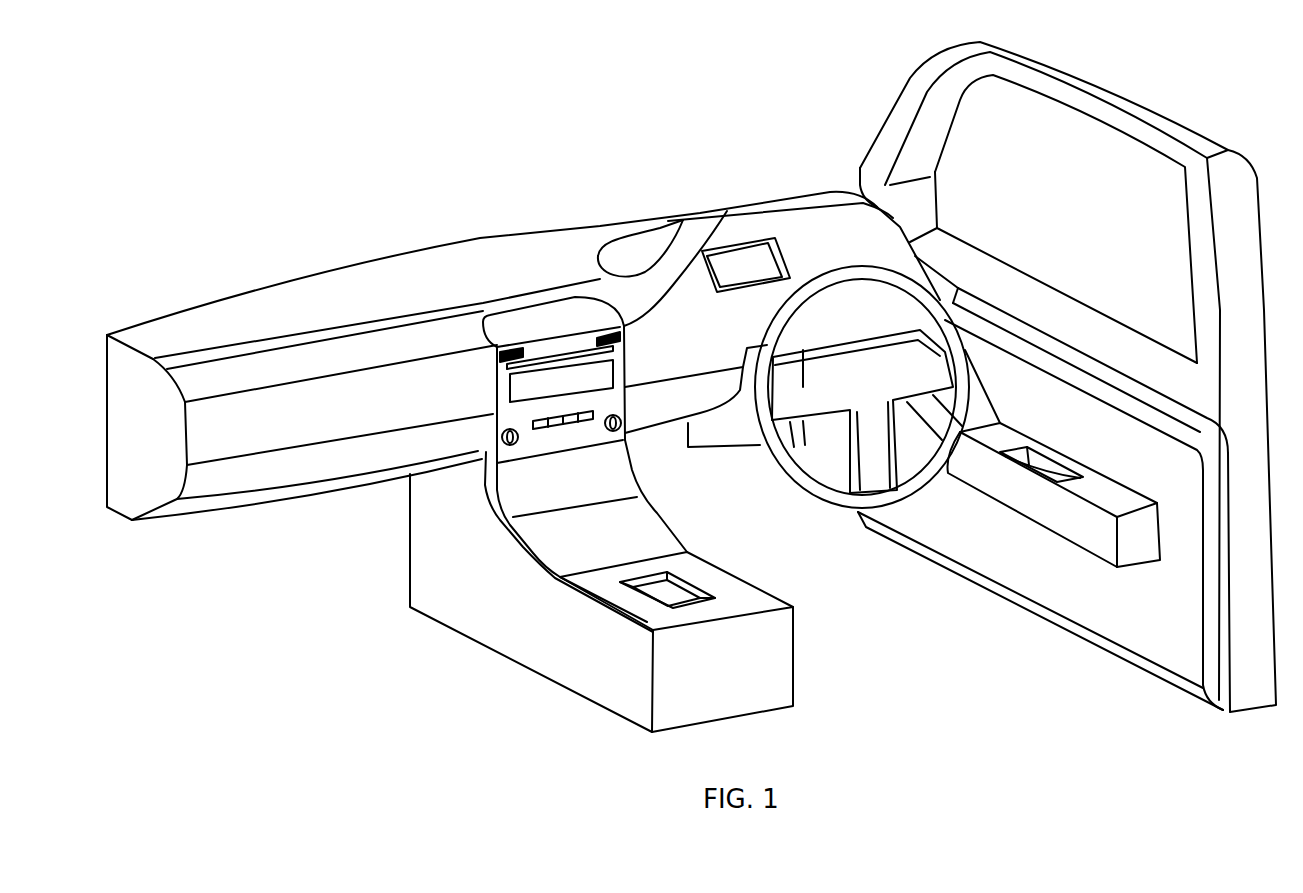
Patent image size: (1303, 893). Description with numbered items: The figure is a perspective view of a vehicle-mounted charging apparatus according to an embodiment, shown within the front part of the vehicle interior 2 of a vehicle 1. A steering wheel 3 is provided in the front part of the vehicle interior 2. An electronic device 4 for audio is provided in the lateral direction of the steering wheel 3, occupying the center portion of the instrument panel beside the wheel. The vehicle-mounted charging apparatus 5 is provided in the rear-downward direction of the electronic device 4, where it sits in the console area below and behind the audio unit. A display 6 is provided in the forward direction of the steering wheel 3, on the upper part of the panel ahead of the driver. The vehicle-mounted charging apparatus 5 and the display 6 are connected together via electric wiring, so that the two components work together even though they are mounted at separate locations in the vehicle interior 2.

The vehicle 1 is at (168, 273).
The vehicle interior 2 is at (600, 185).
The steering wheel 3 is at (820, 505).
The electronic device for audio 4 is at (563, 343).
The vehicle-mounted charging apparatus 5 is at (630, 587).
The display 6 is at (777, 237).